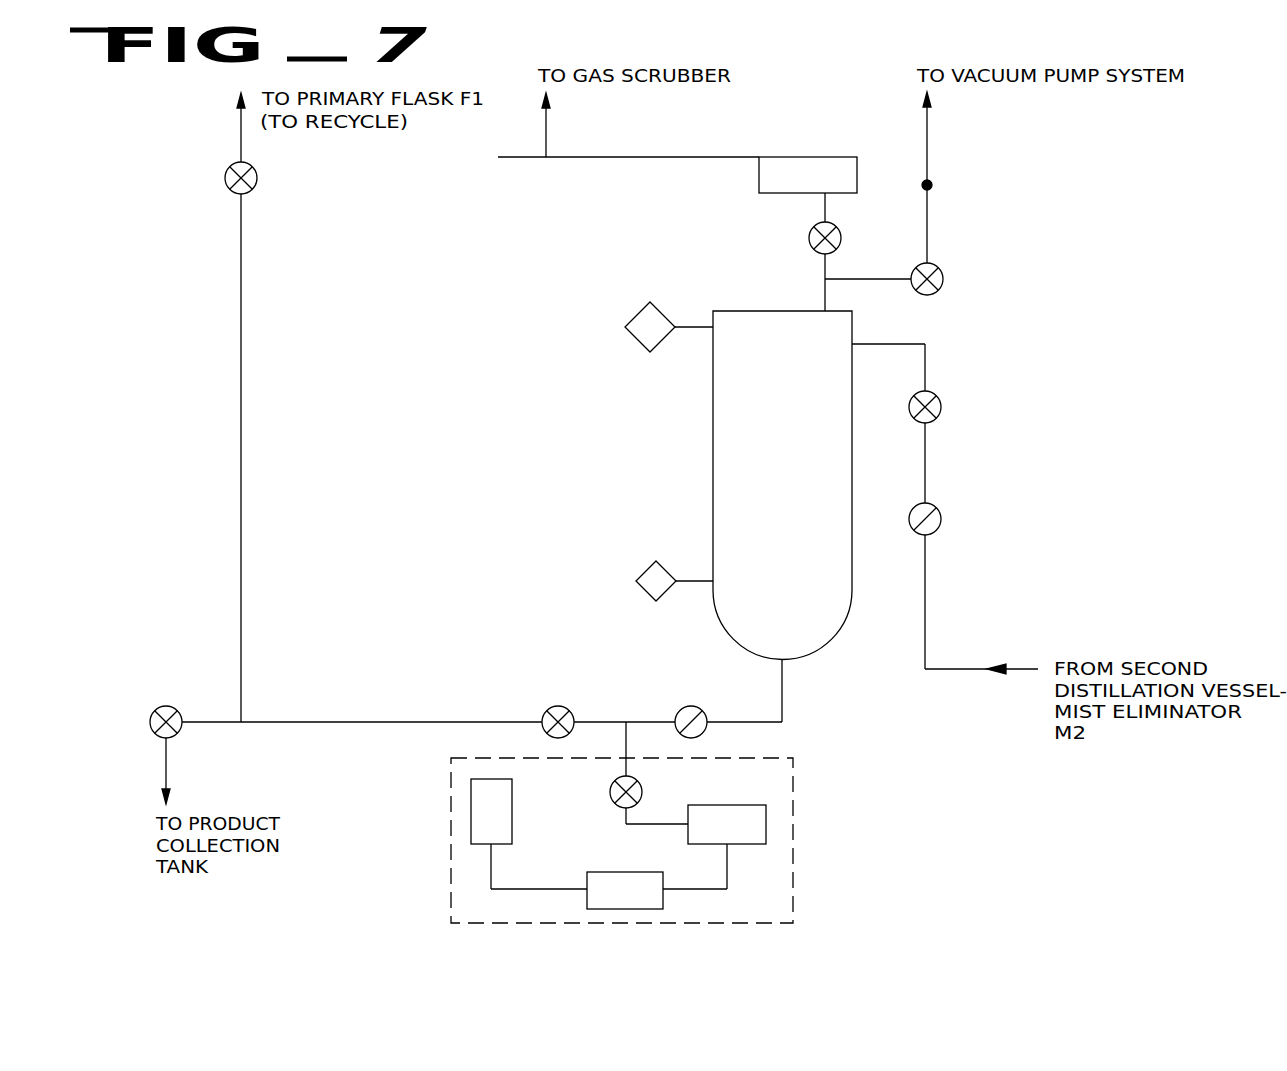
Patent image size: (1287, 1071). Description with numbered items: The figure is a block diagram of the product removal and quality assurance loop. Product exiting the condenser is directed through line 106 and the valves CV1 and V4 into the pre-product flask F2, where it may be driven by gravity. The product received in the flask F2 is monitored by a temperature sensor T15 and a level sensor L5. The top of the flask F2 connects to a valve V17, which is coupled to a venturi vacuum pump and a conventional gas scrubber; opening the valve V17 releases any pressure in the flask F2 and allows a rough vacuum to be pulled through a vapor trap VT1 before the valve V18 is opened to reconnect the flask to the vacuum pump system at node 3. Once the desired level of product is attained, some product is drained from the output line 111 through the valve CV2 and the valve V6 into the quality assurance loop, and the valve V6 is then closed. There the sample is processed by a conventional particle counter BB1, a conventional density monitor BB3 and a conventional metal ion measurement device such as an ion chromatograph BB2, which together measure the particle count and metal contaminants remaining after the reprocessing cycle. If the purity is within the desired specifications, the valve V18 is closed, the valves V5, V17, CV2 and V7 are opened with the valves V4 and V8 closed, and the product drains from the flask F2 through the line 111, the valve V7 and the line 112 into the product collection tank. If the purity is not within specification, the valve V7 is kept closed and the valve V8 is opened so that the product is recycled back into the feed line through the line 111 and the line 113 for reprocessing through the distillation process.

The valve V8 is at (252, 190).
The line 113 is at (244, 497).
The valve V7 is at (163, 706).
The line 112 is at (167, 767).
The output line 111 is at (376, 722).
The valve V5 is at (566, 706).
The valve CV2 is at (697, 706).
The valve V6 is at (668, 793).
The particle counter BB1 is at (714, 847).
The ion detector BB2 is at (529, 834).
The density monitor BB3 is at (625, 890).
The pre-product flask F2 is at (782, 485).
The level sensor L5 is at (643, 346).
The temperature sensor T15 is at (650, 567).
The vapor trap VT1 is at (808, 189).
The valve V17 is at (841, 238).
The valve V18 is at (943, 278).
The node 3 is at (932, 184).
The valve V4 is at (943, 409).
The valve CV1 is at (943, 522).
The line 106 is at (927, 616).